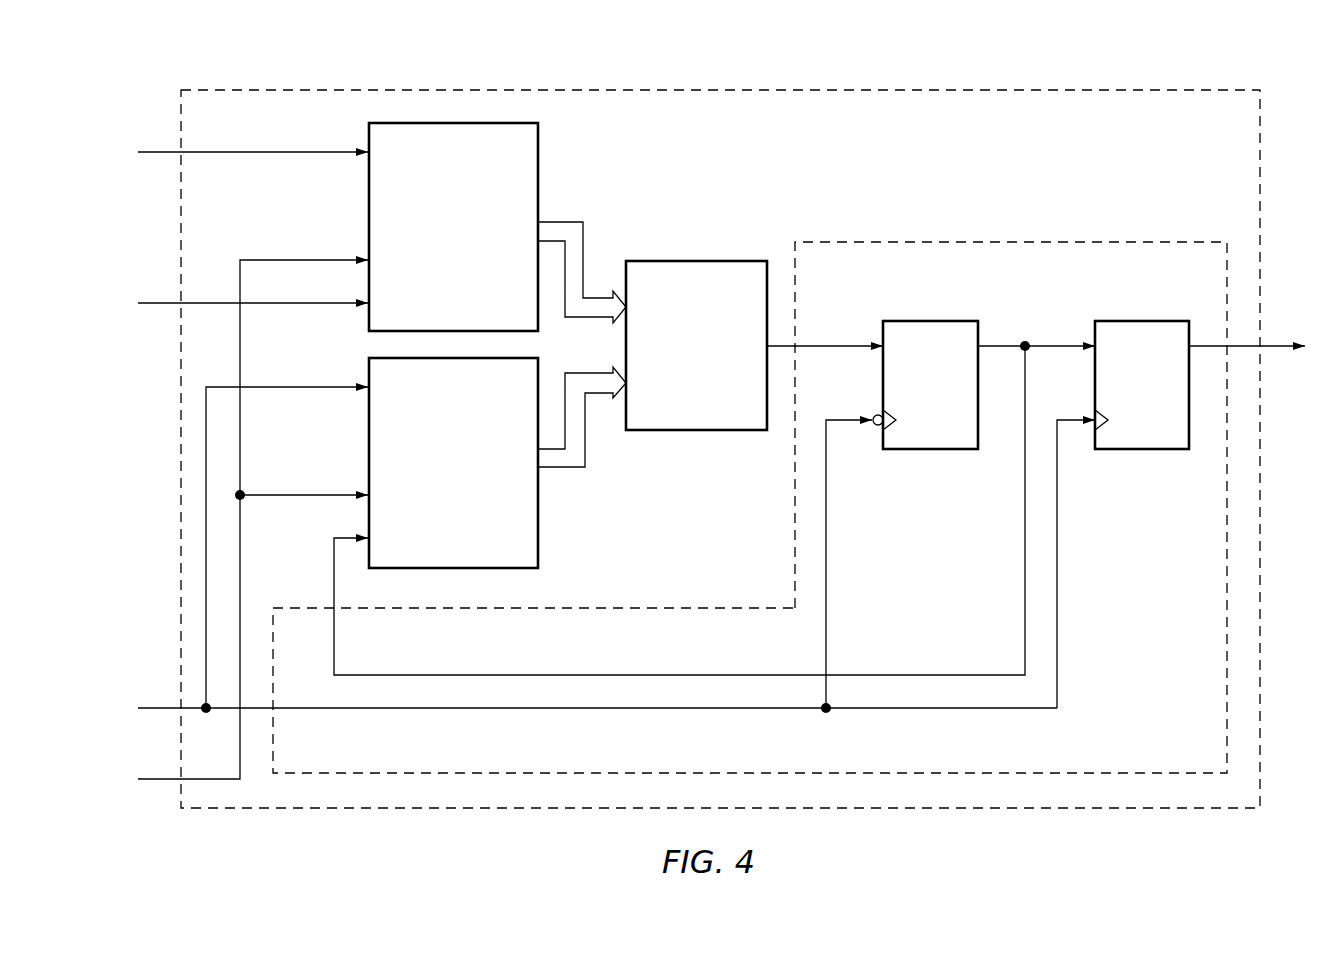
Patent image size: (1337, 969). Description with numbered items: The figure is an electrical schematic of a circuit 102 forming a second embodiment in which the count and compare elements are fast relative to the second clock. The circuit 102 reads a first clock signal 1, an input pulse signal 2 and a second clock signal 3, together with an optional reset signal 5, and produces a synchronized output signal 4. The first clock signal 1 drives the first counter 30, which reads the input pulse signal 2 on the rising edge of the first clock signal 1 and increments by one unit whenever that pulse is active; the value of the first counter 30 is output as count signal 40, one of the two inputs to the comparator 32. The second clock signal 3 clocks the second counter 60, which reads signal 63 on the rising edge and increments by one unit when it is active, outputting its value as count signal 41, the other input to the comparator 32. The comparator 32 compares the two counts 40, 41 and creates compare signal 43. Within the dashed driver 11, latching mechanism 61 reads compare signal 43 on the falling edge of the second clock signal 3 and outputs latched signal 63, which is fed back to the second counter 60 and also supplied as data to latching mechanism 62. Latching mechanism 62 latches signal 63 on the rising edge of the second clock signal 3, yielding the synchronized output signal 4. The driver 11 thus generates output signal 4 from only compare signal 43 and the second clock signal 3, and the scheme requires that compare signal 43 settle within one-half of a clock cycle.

The first clock signal 1 is at (157, 151).
The input pulse signal 2 is at (157, 302).
The second clock signal 3 is at (157, 707).
The synchronized output signal 4 is at (1278, 344).
The reset signal 5 is at (157, 778).
The driver 11 is at (1133, 240).
The first counter 30 is at (539, 137).
The comparator 32 is at (702, 260).
The count signal 40 is at (586, 243).
The count signal 41 is at (585, 448).
The compare signal 43 is at (822, 343).
The second counter 60 is at (539, 548).
The latching mechanism 61 is at (930, 452).
The latching mechanism 62 is at (1142, 452).
The latched signal 63 is at (1010, 343).
The circuit 102 is at (1122, 89).